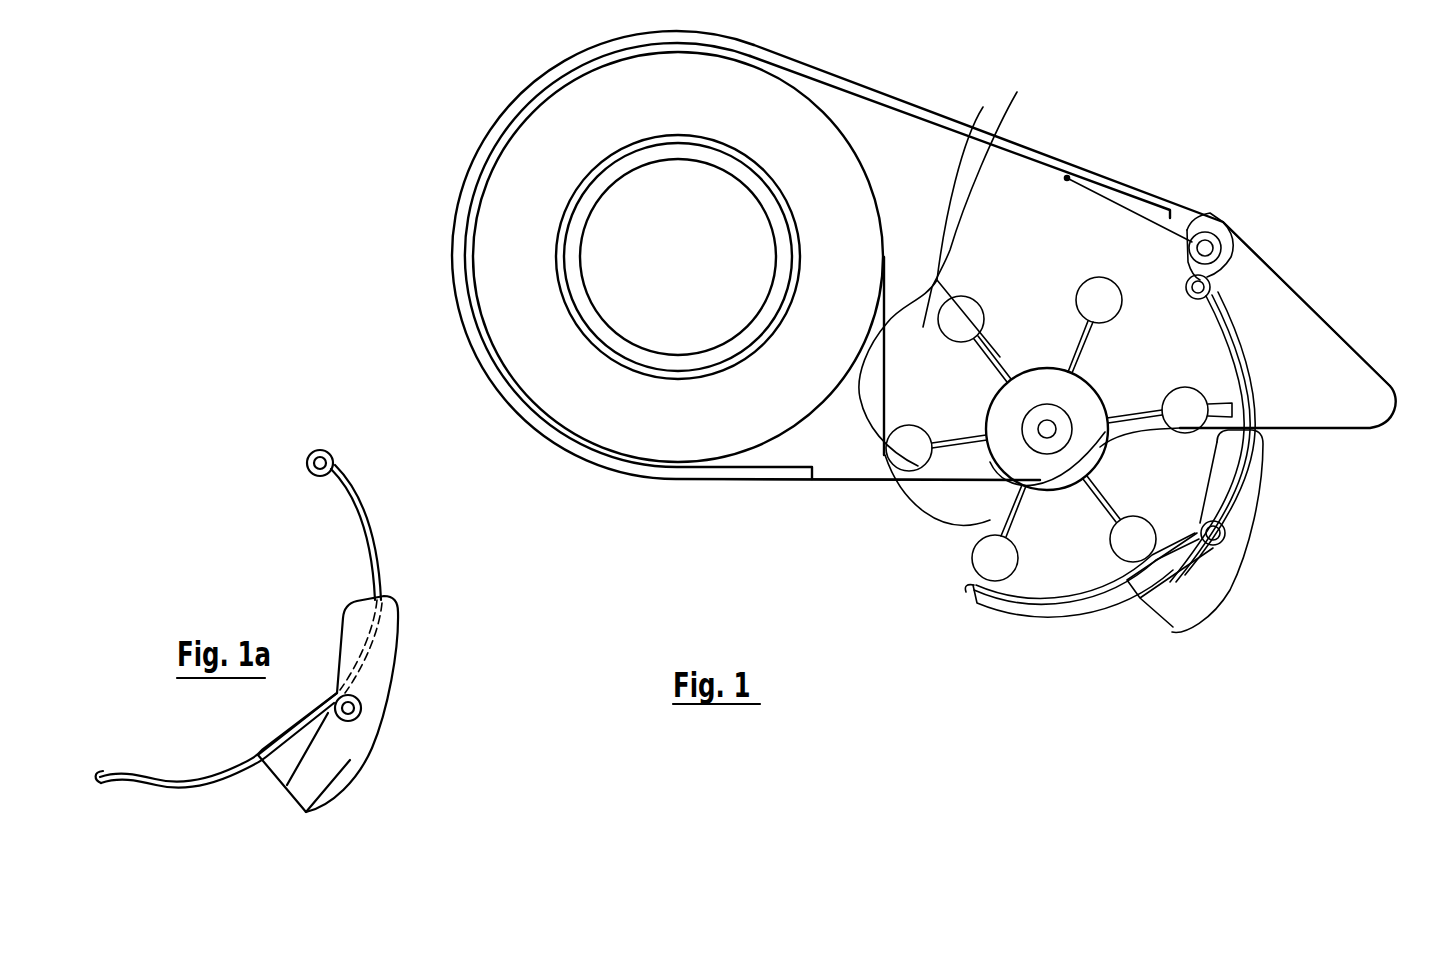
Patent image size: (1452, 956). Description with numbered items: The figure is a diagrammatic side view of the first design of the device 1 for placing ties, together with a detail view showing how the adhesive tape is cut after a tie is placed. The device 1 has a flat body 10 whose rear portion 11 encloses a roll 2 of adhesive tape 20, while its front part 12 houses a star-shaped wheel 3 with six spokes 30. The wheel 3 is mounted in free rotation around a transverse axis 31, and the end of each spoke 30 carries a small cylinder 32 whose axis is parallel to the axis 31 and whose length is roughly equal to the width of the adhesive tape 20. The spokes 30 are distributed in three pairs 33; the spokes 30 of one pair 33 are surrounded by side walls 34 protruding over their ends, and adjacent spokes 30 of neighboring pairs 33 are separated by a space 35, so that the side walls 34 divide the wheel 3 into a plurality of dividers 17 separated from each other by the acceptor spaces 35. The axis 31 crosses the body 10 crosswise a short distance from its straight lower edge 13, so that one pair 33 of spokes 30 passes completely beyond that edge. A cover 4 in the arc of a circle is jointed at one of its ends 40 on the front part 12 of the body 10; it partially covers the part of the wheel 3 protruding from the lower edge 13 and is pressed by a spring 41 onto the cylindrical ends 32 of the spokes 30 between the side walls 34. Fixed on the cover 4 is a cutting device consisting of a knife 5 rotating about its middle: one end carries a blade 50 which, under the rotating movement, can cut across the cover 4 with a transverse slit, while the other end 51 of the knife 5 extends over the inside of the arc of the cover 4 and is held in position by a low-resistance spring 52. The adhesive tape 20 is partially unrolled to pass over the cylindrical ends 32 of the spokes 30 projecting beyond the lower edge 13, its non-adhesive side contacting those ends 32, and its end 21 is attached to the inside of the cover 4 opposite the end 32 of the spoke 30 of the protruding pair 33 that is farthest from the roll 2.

In FIG. 1, the device 1 is at (348, 205).
In FIG. 1, the roll 2 is at (547, 143).
In FIG. 1, the star-shaped wheel 3 is at (973, 540).
In FIG. 1, the cover 4 is at (1088, 597).
In FIG. 1A, the cover 4 is at (168, 783).
In FIG. 1, the knife 5 is at (1233, 543).
In FIG. 1A, the knife 5 is at (386, 708).
In FIG. 1, the flat body 10 is at (910, 103).
In FIG. 1, the rear portion 11 is at (588, 498).
In FIG. 1, the front part 12 is at (1217, 168).
In FIG. 1, the lower edge 13 is at (816, 485).
In FIG. 1, the dividers 17 is at (1418, 318).
In FIG. 1, the adhesive tape 20 is at (1025, 267).
In FIG. 1, the end 21 is at (1085, 550).
In FIG. 1, the spokes 30 is at (1045, 368).
In FIG. 1, the transverse axis 31 is at (1090, 278).
In FIG. 1, the small cylinder 32 is at (980, 350).
In FIG. 1, the pairs 33 is at (1183, 337).
In FIG. 1, the side walls 34 is at (1210, 368).
In FIG. 1, the space 35 is at (1172, 483).
In FIG. 1, the end 40 is at (1200, 212).
In FIG. 1, the spring 41 is at (1200, 273).
In FIG. 1, the blade 50 is at (1130, 613).
In FIG. 1A, the blade 50 is at (268, 780).
In FIG. 1, the end 51 is at (1220, 462).
In FIG. 1A, the end 51 is at (348, 628).
In FIG. 1, the spring 52 is at (1210, 580).
In FIG. 1A, the spring 52 is at (352, 768).